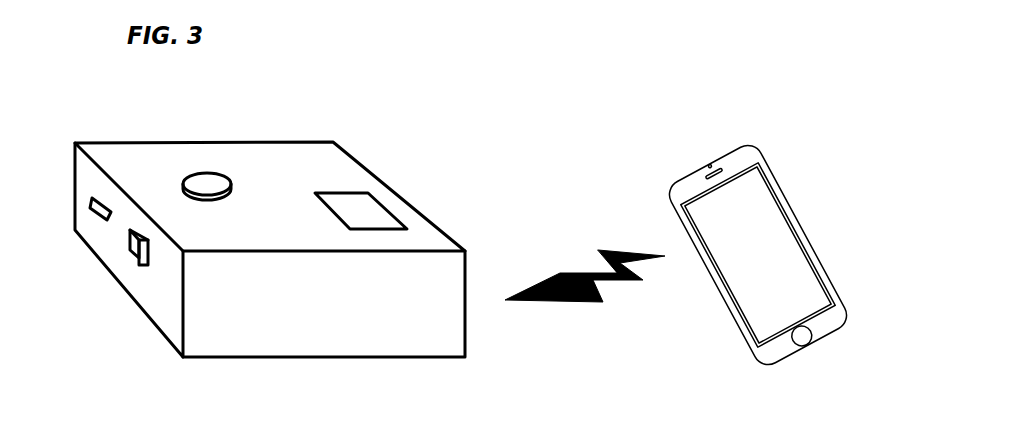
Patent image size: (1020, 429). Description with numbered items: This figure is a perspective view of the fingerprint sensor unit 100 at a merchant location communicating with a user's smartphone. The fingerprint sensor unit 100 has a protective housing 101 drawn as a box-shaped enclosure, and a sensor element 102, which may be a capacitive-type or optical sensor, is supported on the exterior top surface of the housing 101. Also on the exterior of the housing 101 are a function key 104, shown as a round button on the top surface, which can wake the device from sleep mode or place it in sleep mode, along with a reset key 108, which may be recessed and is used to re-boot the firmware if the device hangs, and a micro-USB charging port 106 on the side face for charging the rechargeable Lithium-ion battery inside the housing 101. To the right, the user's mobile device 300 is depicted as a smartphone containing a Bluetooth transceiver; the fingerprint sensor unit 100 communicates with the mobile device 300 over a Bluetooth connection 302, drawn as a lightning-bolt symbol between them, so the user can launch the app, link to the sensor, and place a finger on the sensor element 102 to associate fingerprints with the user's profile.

The fingerprint sensor unit 100 is at (282, 105).
The protective housing 101 is at (376, 177).
The sensor element 102 is at (365, 220).
The function key 104 is at (205, 187).
The micro-USB charging port 106 is at (92, 212).
The reset key 108 is at (133, 252).
The mobile device 300 is at (748, 157).
The Bluetooth connection 302 is at (576, 273).